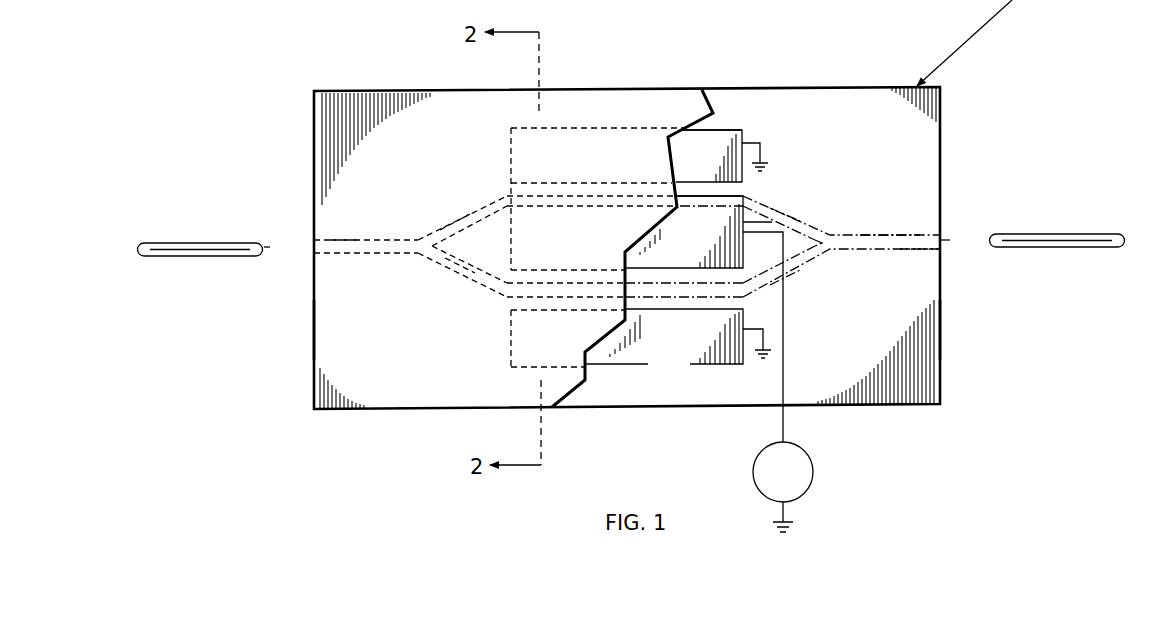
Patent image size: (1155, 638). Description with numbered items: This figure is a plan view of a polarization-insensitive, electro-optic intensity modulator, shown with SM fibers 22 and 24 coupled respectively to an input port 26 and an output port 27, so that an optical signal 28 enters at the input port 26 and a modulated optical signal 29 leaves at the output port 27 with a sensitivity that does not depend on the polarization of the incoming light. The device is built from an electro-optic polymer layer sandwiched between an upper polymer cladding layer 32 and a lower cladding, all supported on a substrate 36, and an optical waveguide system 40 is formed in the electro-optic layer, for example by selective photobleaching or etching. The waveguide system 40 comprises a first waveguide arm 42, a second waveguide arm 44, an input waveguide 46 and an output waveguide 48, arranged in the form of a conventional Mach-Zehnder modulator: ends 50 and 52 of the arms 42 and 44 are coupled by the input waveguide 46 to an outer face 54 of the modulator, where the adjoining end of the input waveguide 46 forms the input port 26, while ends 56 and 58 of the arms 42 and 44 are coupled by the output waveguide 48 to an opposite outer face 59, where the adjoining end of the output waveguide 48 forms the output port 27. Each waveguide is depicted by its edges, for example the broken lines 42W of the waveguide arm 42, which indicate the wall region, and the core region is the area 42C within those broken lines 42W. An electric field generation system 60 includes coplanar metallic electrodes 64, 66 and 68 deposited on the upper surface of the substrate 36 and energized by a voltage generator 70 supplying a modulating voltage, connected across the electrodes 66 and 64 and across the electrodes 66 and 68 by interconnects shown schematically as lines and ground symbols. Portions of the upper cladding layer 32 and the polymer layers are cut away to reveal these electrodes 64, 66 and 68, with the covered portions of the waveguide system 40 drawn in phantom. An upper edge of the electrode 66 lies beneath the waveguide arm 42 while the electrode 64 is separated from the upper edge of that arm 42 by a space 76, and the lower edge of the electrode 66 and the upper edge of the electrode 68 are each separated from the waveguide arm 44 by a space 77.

The SM fiber 22 is at (195, 243).
The SM fiber 24 is at (1062, 234).
The input port 26 is at (317, 258).
The output port 27 is at (945, 248).
The optical signal 28 is at (313, 247).
The optical signal 29 is at (994, 240).
The upper polymer cladding layer 32 is at (378, 388).
The substrate 36 is at (893, 360).
The optical waveguide system 40 is at (458, 212).
The first waveguide arm 42 is at (567, 190).
The area 42C is at (530, 210).
The broken lines 42W is at (590, 210).
The second waveguide arm 44 is at (567, 300).
The input waveguide 46 is at (332, 258).
The output waveguide 48 is at (890, 252).
The end 50 is at (440, 228).
The end 52 is at (440, 262).
The outer face 54 is at (314, 331).
The end 56 is at (815, 225).
The end 58 is at (808, 262).
The outer face 59 is at (941, 327).
The electric field generation system 60 is at (746, 128).
The electrode 64 is at (744, 130).
The electrode 66 is at (797, 217).
The electrode 68 is at (698, 364).
The voltage generator 70 is at (813, 472).
The space 76 is at (710, 181).
The space 77 is at (683, 318).